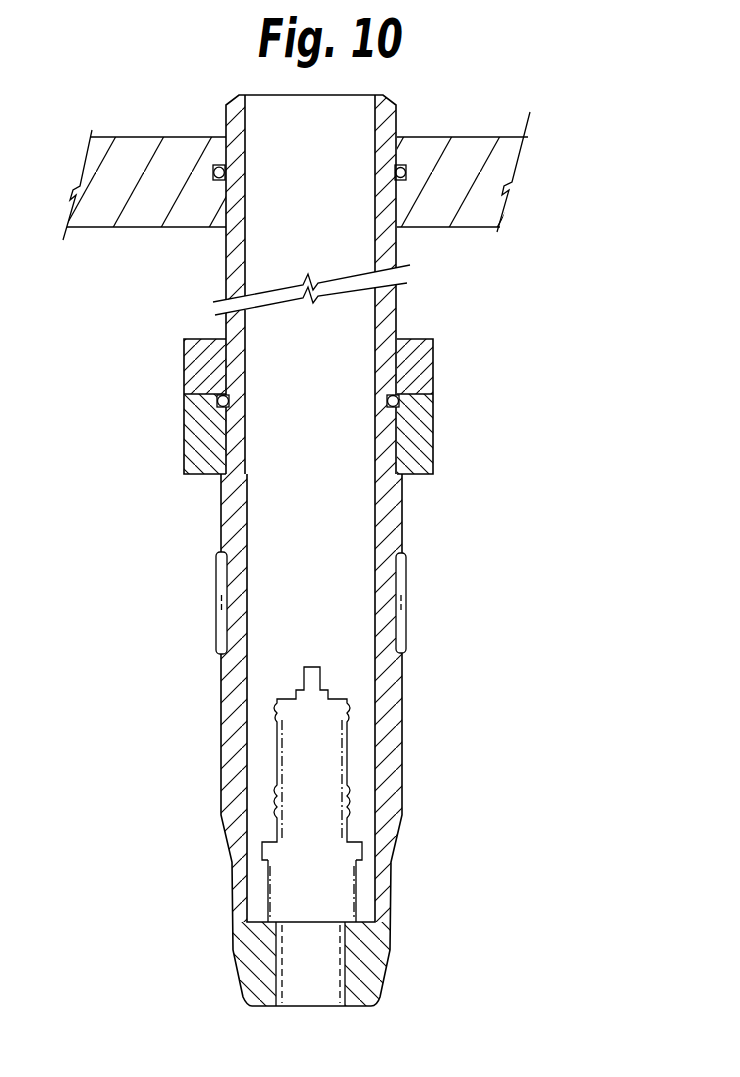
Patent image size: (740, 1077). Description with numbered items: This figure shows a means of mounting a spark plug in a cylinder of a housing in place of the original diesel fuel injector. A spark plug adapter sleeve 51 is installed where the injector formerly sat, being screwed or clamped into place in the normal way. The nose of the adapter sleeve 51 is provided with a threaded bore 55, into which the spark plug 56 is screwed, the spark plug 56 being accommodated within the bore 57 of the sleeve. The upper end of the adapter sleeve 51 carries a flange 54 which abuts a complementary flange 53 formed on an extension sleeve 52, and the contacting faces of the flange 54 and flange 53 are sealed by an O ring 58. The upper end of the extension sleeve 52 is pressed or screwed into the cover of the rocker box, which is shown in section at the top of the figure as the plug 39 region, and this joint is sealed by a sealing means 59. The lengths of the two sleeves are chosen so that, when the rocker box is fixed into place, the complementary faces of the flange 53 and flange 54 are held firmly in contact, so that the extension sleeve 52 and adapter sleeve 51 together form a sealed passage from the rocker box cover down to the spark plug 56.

The removable plug 39 is at (296, 148).
The spark plug adapter sleeve 51 is at (404, 677).
The extension sleeve 52 is at (399, 249).
The complementary flange 53 is at (428, 367).
The flange 54 is at (424, 448).
The threaded bore 55 is at (280, 975).
The spark plug 56 is at (286, 900).
The bore 57 is at (251, 742).
The O ring 58 is at (217, 412).
The sealing means 59 is at (216, 160).